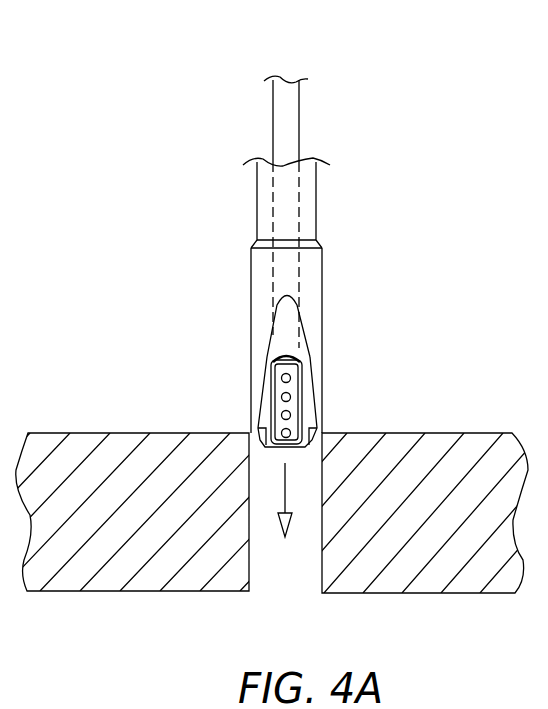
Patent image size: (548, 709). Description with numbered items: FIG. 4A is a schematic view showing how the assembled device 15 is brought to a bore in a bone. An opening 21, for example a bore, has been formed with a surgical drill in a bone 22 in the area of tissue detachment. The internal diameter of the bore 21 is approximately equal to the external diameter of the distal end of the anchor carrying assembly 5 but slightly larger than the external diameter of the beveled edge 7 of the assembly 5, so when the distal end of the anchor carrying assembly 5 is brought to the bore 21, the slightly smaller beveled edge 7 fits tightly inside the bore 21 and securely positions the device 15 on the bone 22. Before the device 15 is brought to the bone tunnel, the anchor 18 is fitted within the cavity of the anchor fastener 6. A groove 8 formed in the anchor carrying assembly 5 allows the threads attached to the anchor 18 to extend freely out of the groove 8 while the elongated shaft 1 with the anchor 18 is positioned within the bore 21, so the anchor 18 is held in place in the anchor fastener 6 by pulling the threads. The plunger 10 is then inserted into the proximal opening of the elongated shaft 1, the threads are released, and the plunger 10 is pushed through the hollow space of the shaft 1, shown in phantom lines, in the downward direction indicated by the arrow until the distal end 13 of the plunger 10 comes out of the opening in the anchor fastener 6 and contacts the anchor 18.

The device 15 is at (337, 70).
The plunger 10 is at (290, 123).
The elongated shaft 1 is at (308, 218).
The anchor carrying assembly 5 is at (310, 293).
The groove 8 is at (288, 342).
The distal end of the plunger 13 is at (283, 357).
The anchor 18 is at (280, 405).
The anchor fastener 6 is at (302, 417).
The beveled edge 7 is at (320, 437).
The bone 22 is at (440, 452).
The opening 21 is at (280, 578).